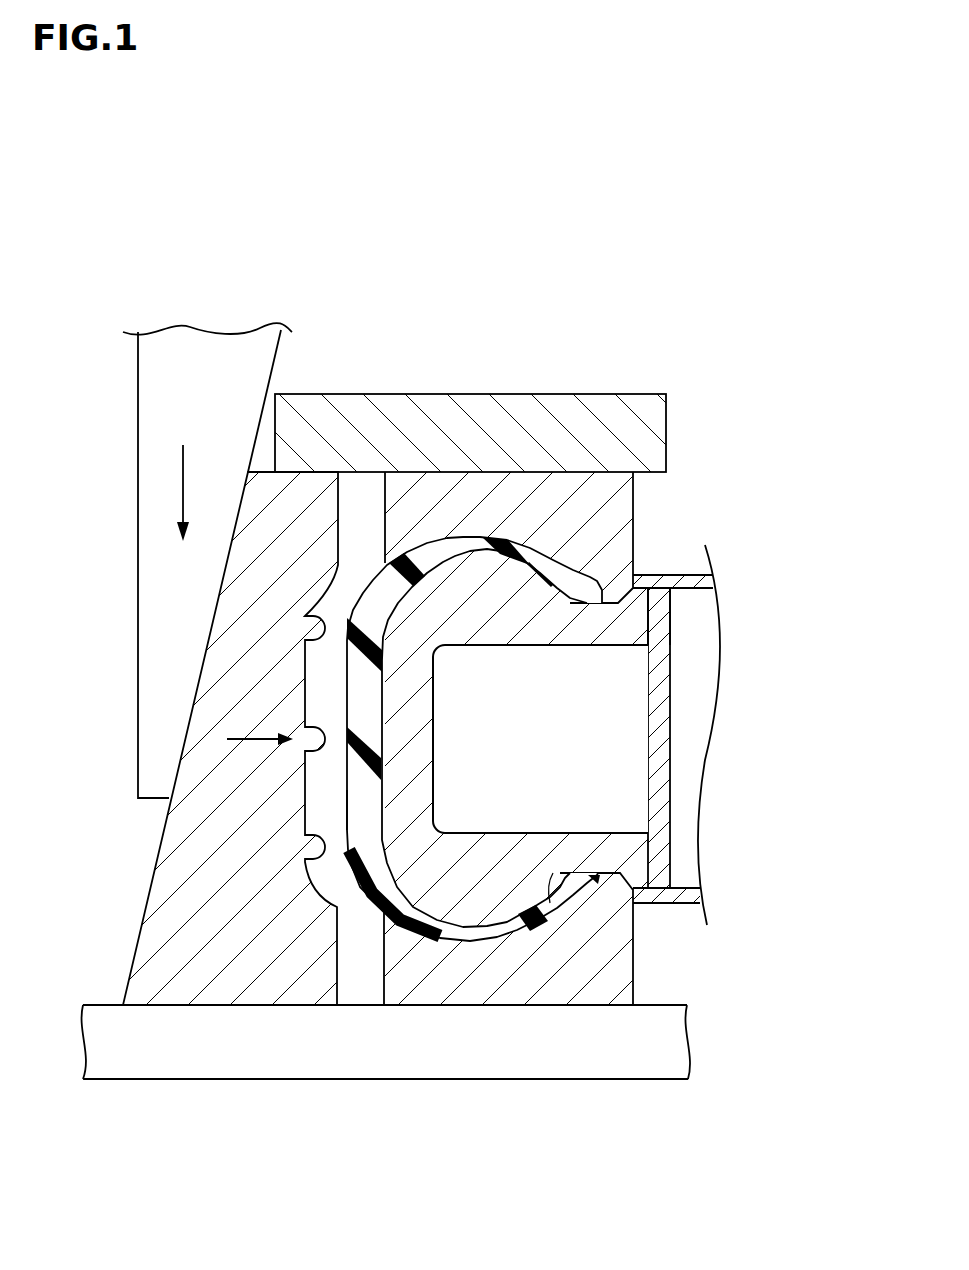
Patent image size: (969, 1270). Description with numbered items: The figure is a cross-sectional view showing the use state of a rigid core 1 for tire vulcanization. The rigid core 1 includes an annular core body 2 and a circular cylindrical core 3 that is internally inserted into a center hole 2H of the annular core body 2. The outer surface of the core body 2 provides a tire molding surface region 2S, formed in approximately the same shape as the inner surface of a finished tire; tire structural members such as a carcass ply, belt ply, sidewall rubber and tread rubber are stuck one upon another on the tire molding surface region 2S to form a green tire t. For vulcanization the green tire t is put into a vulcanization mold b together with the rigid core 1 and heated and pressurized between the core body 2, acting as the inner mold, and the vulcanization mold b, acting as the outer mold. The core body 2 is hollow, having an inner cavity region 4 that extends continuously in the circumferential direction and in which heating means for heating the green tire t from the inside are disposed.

The rigid core 1 is at (745, 672).
The annular core body 2 is at (413, 718).
The tire molding surface region 2S is at (383, 688).
The center hole 2H is at (660, 620).
The circular cylindrical core 3 is at (672, 802).
The inner cavity region 4 is at (552, 757).
The vulcanization mold b is at (538, 500).
The green tire t is at (362, 815).